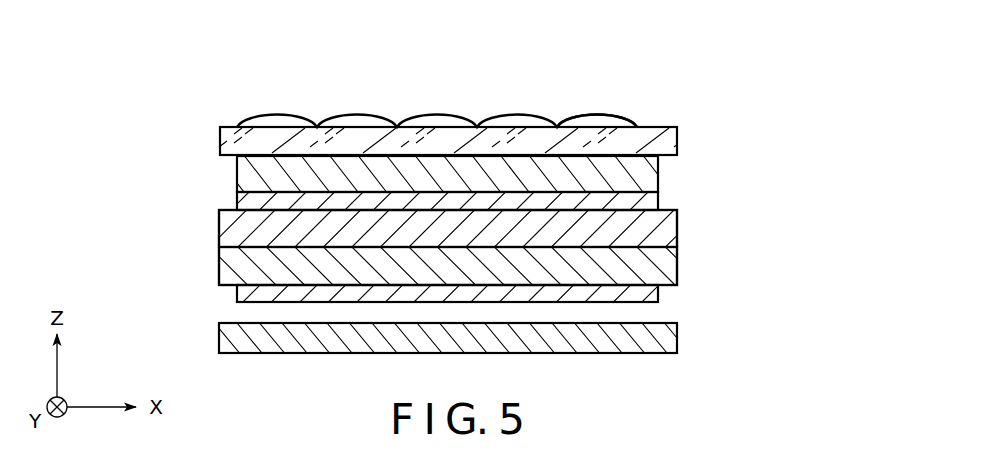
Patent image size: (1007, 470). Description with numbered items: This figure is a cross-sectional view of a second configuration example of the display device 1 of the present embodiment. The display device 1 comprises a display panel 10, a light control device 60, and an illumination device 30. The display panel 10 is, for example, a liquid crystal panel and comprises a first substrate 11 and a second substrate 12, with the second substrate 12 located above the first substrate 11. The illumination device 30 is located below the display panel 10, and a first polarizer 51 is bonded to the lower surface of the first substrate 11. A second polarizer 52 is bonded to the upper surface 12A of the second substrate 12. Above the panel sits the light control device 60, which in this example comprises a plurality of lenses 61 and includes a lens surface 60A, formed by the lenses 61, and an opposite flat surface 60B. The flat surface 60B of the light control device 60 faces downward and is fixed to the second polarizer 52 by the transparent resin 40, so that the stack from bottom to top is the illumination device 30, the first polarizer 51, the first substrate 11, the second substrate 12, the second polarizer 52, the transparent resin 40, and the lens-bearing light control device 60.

The display device 1 is at (814, 153).
The display panel 10 is at (216, 210).
The first substrate 11 is at (670, 265).
The second substrate 12 is at (670, 231).
The upper surface of the second substrate 12A is at (588, 206).
The illumination device 30 is at (226, 341).
The transparent resin 40 is at (245, 177).
The first polarizer 51 is at (653, 295).
The second polarizer 52 is at (652, 198).
The light control device 60 is at (226, 143).
The lens surface 60A is at (604, 109).
The flat surface 60B is at (624, 160).
The lens 61 is at (280, 113).